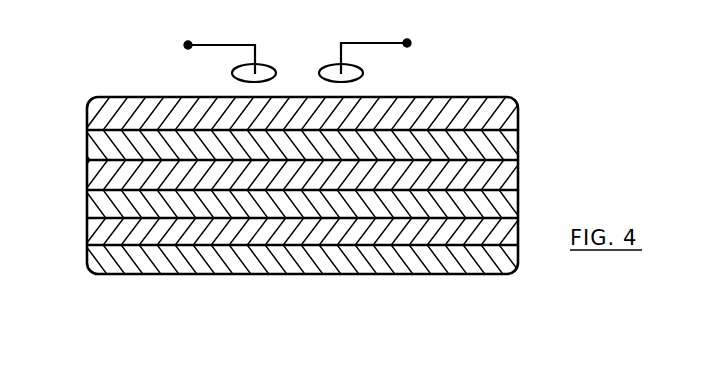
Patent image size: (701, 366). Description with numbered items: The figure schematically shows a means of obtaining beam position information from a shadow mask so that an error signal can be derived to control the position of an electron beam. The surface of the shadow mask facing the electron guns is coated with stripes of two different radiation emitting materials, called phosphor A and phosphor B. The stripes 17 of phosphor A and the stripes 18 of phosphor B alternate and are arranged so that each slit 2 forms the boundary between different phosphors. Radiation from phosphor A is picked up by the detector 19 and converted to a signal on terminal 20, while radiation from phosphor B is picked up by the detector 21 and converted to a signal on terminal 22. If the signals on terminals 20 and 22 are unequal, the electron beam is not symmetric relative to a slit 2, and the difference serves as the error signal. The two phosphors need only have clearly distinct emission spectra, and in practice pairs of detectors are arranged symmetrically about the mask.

The slit 2 is at (433, 123).
The stripes of phosphor A 17 is at (102, 233).
The stripes of phosphor B 18 is at (505, 258).
The detector 19 is at (263, 63).
The terminal 20 is at (207, 43).
The detector 21 is at (330, 65).
The terminal 22 is at (388, 42).